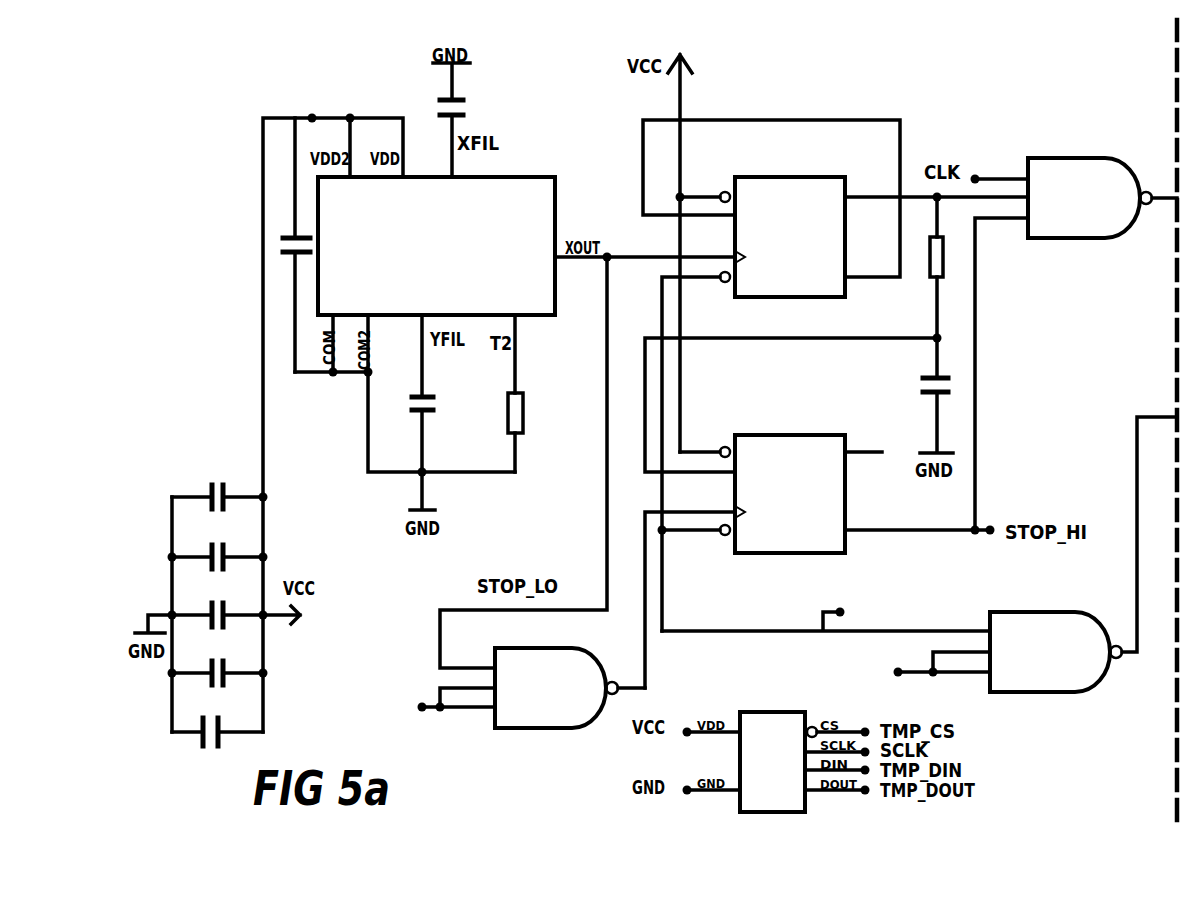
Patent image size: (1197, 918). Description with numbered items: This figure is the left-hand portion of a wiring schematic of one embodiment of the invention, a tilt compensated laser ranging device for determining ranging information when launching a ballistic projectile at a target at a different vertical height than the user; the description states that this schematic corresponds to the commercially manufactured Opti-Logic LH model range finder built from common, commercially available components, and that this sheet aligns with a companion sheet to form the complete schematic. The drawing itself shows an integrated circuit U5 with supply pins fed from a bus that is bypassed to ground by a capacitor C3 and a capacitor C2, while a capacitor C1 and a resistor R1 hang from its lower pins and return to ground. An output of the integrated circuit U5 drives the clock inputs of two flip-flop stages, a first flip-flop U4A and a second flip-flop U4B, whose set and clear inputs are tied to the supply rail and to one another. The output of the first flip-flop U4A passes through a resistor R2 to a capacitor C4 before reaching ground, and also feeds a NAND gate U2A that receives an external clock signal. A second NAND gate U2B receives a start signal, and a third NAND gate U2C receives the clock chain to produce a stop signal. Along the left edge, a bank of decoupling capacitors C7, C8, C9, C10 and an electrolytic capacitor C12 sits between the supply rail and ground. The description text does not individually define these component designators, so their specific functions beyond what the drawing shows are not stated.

The accelerometer / sensor IC U5 is at (436, 246).
The capacitor C1 is at (427, 412).
The capacitor C2 is at (448, 120).
The capacitor C3 is at (293, 245).
The capacitor C4 is at (939, 415).
The capacitor C7 is at (217, 494).
The capacitor C8 is at (217, 554).
The capacitor C9 is at (217, 612).
The capacitor C10 is at (217, 670).
The electrolytic capacitor C12 is at (217, 730).
The resistor R1 is at (506, 393).
The resistor R2 is at (928, 257).
The D flip-flop U4A is at (788, 225).
The D flip-flop U4B is at (782, 482).
The NAND gate U2A is at (1086, 187).
The NAND gate U2B is at (919, 554).
The NAND gate U2C is at (505, 677).